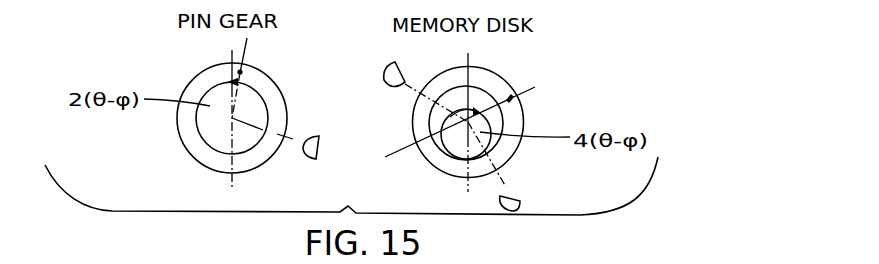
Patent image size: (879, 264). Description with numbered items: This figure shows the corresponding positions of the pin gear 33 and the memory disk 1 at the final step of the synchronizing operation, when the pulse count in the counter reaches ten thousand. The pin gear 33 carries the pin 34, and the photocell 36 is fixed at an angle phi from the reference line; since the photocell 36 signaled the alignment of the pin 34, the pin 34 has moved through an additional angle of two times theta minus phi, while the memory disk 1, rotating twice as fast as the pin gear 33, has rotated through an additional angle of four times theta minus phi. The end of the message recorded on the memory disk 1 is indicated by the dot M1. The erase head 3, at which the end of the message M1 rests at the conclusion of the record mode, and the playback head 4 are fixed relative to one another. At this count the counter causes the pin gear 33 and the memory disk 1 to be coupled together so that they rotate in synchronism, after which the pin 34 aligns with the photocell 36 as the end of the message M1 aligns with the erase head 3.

The pin gear 33 is at (196, 73).
The pin 34 is at (243, 72).
The photocell 36 is at (309, 160).
The memory disk 1 is at (489, 70).
The end of the message M1 is at (511, 98).
The playback head 4 is at (396, 63).
The erase head 3 is at (521, 190).